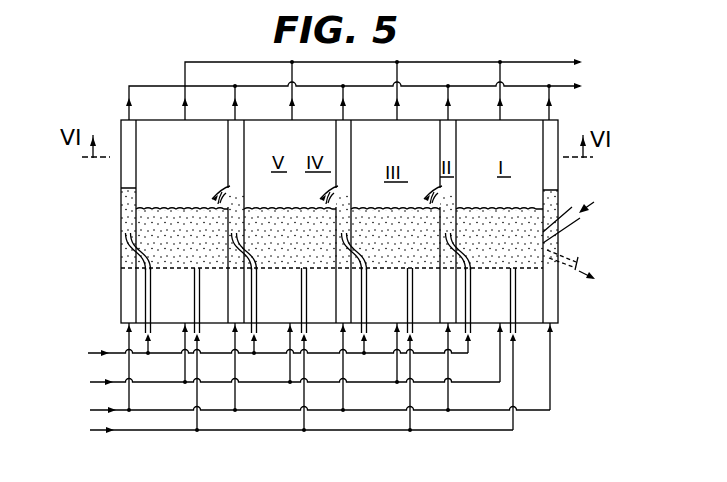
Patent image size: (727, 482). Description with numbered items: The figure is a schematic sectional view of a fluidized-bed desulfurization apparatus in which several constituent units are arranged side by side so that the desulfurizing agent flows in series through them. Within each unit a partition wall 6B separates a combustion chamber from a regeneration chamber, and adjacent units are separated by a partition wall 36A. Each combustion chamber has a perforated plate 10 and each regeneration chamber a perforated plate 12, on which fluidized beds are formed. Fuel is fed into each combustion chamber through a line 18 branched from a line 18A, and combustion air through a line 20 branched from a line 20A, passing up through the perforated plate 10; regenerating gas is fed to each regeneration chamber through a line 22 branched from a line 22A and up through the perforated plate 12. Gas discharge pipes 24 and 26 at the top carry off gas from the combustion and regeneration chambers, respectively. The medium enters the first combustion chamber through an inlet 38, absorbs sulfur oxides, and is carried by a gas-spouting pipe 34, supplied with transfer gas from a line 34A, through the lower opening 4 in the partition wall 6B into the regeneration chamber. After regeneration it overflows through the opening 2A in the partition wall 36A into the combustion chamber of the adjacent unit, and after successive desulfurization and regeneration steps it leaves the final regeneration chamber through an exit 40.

The gas discharge pipe 24 is at (556, 61).
The gas discharge pipe 26 is at (557, 88).
The partition wall 36A is at (336, 137).
The partition wall 6B is at (352, 139).
The opening 2A is at (328, 191).
The lower opening 4 is at (359, 248).
The inlet 38 is at (565, 225).
The exit 40 is at (573, 273).
The perforated plate 10 is at (399, 270).
The perforated plate 12 is at (309, 276).
The gas-spouting pipe 34 is at (153, 309).
The fuel feed line 18 is at (206, 341).
The combustion air feed line 20 is at (184, 372).
The regenerating gas feed line 22 is at (131, 394).
The transfer gas line 34A is at (123, 351).
The combustion air line 20A is at (126, 381).
The regenerating gas line 22A is at (117, 409).
The fuel line 18A is at (100, 430).